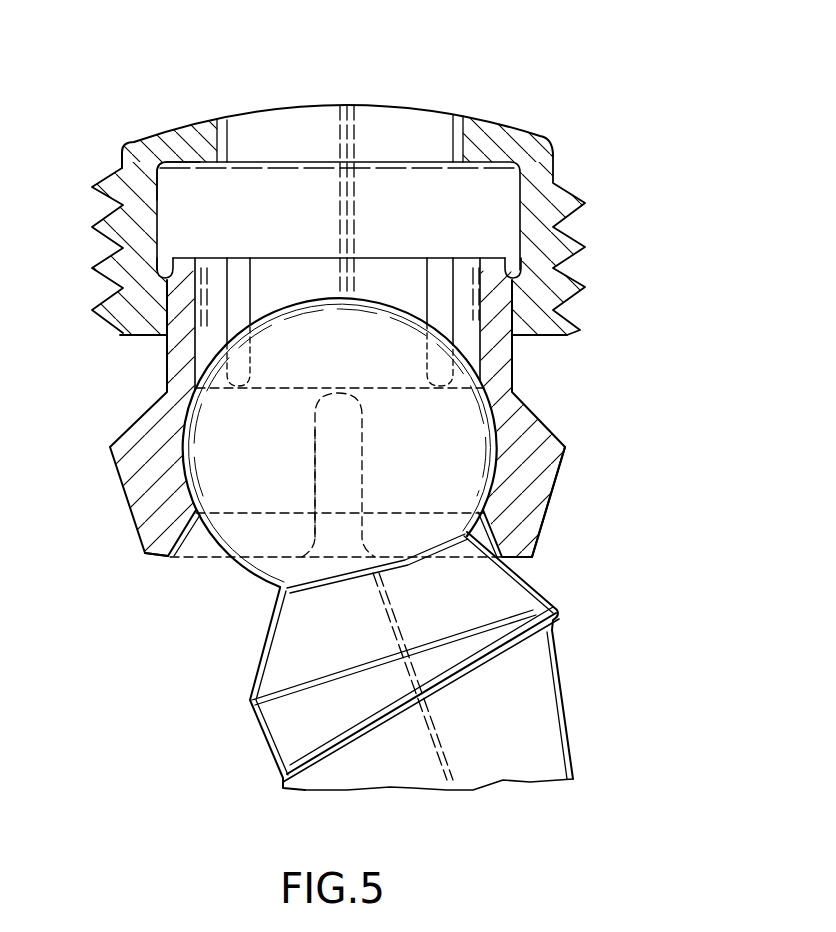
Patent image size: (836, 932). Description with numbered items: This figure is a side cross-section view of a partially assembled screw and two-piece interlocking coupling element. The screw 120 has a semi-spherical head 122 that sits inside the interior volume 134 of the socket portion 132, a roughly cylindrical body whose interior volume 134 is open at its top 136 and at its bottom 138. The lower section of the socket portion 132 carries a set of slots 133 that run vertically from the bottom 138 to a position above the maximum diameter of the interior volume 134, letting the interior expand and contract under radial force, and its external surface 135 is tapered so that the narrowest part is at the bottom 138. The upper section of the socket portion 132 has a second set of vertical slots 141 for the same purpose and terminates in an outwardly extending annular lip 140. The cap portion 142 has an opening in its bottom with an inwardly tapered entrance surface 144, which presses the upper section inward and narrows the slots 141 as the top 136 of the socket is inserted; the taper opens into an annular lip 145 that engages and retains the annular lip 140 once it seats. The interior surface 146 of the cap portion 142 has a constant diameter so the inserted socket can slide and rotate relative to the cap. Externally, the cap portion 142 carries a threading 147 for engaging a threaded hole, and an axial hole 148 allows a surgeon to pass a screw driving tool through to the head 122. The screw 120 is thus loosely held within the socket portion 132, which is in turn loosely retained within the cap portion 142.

The screw 120 is at (543, 668).
The semi-spherical head 122 is at (468, 407).
The socket portion 132 is at (580, 419).
The slots 133 is at (325, 485).
The interior volume 134 is at (438, 462).
The external surface 135 is at (548, 507).
The top 136 is at (372, 258).
The bottom 138 is at (202, 565).
The annular lip 140 is at (167, 268).
The vertical slots 141 is at (233, 323).
The cap portion 142 is at (563, 136).
The inwardly tapered entrance surface 144 is at (150, 322).
The annular lip 145 is at (545, 332).
The interior surface 146 is at (160, 183).
The threading 147 is at (572, 233).
The axial hole 148 is at (344, 110).